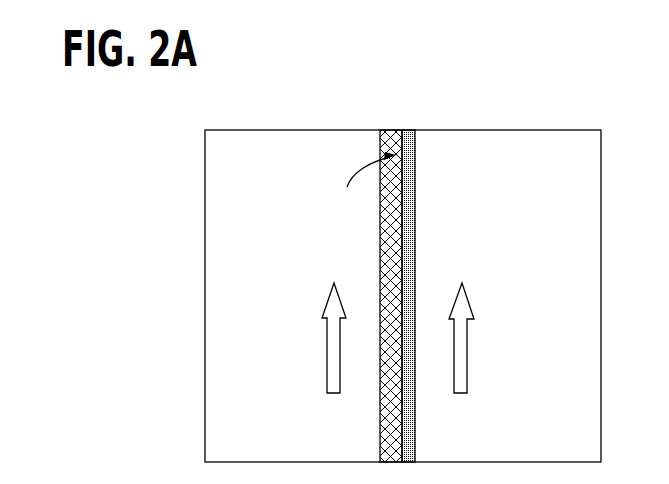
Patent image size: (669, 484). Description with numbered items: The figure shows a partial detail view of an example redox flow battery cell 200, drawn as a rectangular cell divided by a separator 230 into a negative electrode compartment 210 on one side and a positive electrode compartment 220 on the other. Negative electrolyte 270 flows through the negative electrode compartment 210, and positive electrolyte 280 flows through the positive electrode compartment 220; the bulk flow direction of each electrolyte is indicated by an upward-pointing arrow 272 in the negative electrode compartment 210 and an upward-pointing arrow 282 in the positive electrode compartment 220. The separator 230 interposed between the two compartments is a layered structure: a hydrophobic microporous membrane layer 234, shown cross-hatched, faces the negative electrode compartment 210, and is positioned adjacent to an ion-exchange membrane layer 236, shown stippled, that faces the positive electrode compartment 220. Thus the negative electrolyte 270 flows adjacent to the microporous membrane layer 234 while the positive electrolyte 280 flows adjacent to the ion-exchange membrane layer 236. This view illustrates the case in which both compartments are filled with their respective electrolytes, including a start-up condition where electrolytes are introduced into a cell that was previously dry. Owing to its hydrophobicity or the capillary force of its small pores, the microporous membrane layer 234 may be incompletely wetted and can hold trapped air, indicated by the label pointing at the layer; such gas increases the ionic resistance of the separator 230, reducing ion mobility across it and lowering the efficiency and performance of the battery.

The redox flow battery cell 200 is at (150, 146).
The negative electrode compartment 210 is at (302, 162).
The positive electrode compartment 220 is at (519, 162).
The separator 230 is at (408, 296).
The microporous membrane layer 234 is at (390, 433).
The ion-exchange membrane layer 236 is at (413, 450).
The negative electrolyte 270 is at (285, 314).
The arrow 272 is at (328, 375).
The positive electrolyte 280 is at (552, 313).
The arrow 282 is at (467, 377).